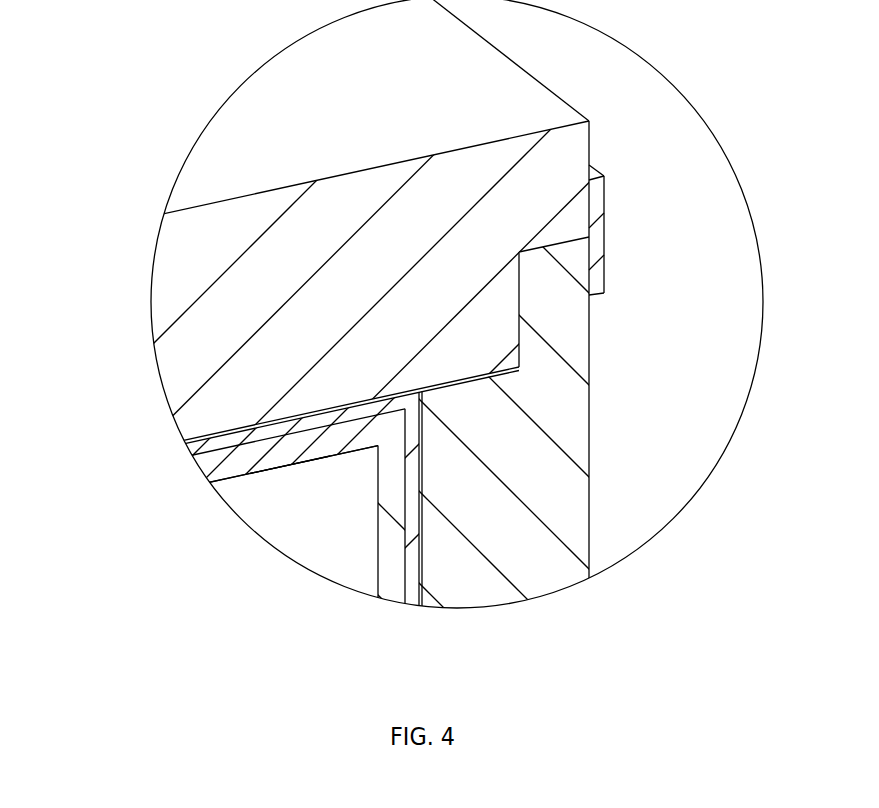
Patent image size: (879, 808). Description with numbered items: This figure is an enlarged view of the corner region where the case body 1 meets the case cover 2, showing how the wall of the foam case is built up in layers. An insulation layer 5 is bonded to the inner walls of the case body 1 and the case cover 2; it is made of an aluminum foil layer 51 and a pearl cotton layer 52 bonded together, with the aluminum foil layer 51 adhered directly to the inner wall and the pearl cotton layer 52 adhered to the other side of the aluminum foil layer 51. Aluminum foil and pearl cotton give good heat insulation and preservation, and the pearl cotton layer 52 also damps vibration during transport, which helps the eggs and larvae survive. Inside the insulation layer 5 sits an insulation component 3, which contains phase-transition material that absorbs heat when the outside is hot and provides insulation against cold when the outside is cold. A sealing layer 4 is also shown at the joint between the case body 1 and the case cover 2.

The case body 1 is at (540, 572).
The case cover 2 is at (173, 295).
The insulation component 3 is at (293, 460).
The sealing layer 4 is at (597, 243).
The insulation layer 5 is at (106, 483).
The aluminum foil layer 51 is at (187, 443).
The pearl cotton layer 52 is at (217, 478).